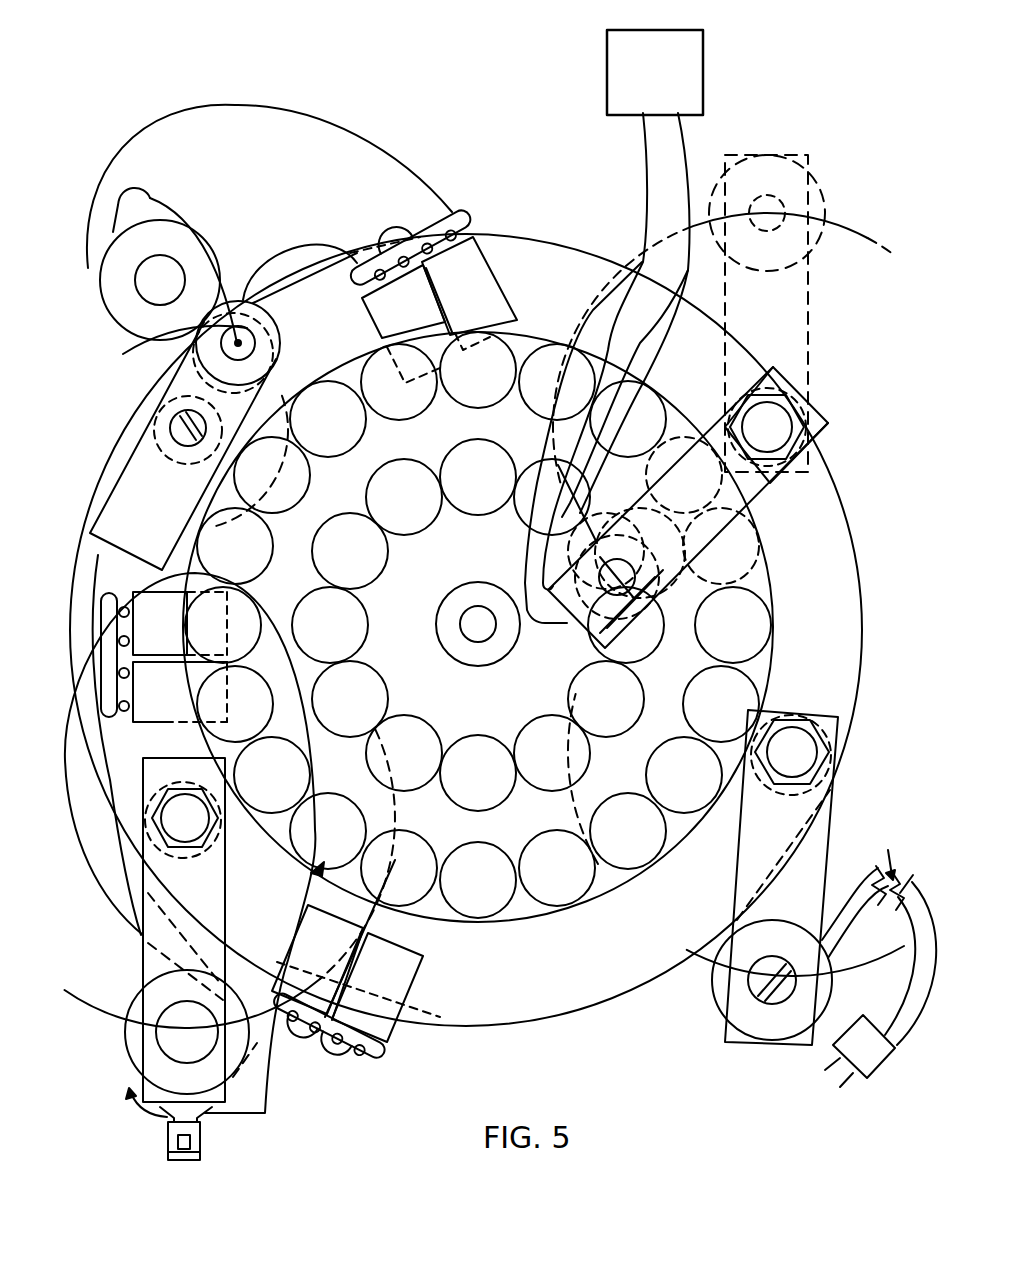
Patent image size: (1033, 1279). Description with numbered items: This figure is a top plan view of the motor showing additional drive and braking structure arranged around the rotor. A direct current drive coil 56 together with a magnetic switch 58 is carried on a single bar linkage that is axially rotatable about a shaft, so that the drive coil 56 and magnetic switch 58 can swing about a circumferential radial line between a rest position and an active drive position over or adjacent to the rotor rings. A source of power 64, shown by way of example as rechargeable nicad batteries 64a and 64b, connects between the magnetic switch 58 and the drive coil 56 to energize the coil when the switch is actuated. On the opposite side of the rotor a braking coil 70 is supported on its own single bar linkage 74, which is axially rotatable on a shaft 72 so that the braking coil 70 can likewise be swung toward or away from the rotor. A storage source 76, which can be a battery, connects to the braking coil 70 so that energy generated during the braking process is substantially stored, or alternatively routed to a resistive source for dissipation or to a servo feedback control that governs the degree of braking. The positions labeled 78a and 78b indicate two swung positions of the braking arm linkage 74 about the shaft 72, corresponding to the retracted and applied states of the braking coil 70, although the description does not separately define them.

The direct current drive coil 56 is at (203, 236).
The magnetic switch 58 is at (280, 333).
The source of power 64 is at (382, 284).
The battery 64a is at (403, 324).
The battery 64b is at (469, 293).
The braking coil 70 is at (826, 210).
The shaft 72 is at (800, 420).
The single bar linkage 74 is at (810, 300).
The storage source 76 is at (703, 60).
The arm in first position 78a is at (791, 284).
The arm in second position 78b is at (772, 508).